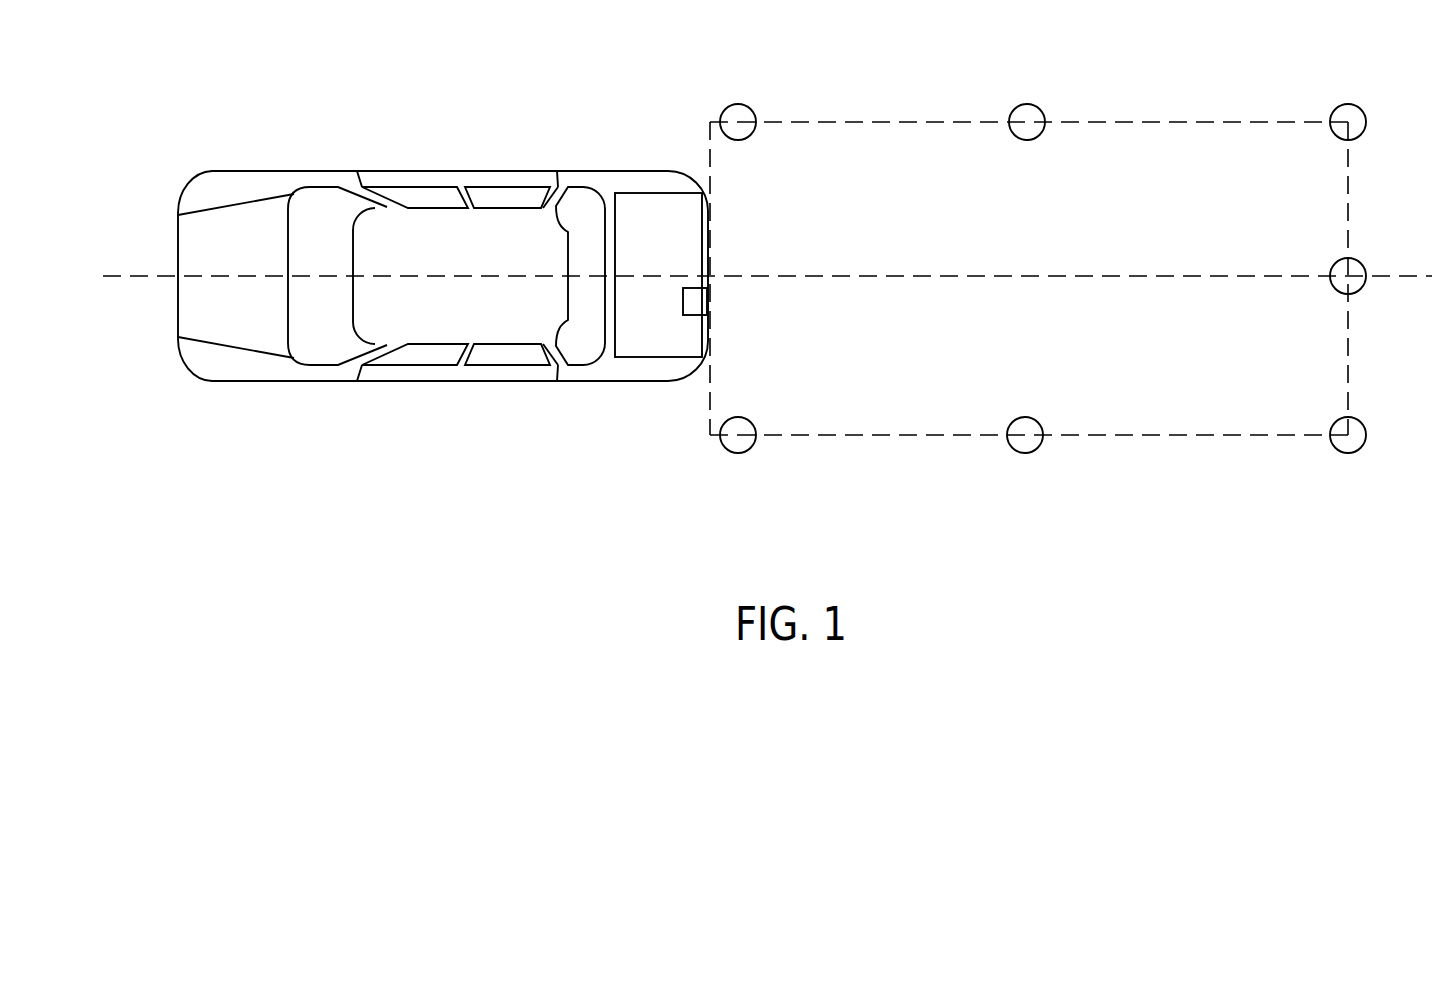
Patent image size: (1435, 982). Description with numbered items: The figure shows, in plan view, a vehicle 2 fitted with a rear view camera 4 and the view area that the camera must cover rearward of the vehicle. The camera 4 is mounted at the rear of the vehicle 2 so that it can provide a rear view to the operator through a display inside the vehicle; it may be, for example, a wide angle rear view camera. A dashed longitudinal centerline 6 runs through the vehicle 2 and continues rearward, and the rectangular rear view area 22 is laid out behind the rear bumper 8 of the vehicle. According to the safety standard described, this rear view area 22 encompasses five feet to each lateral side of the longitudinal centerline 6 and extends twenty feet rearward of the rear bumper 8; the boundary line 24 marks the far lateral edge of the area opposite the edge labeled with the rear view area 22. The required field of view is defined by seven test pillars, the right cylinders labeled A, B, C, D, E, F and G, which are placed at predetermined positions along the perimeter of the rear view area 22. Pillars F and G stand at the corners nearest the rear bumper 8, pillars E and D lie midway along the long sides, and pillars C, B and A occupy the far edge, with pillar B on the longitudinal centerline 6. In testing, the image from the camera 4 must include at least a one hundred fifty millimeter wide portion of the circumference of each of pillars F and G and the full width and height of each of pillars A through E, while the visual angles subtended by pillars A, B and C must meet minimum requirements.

The vehicle 2 is at (275, 215).
The camera 4 is at (683, 303).
The longitudinal centerline 6 is at (127, 272).
The rear bumper 8 is at (712, 223).
The rear view area 22 is at (1212, 120).
The lower boundary line 24 is at (1212, 437).
The pillar A is at (1362, 424).
The pillar B is at (1363, 265).
The pillar C is at (1348, 104).
The pillar D is at (1025, 453).
The pillar E is at (1027, 104).
The pillar F is at (738, 453).
The pillar G is at (738, 104).